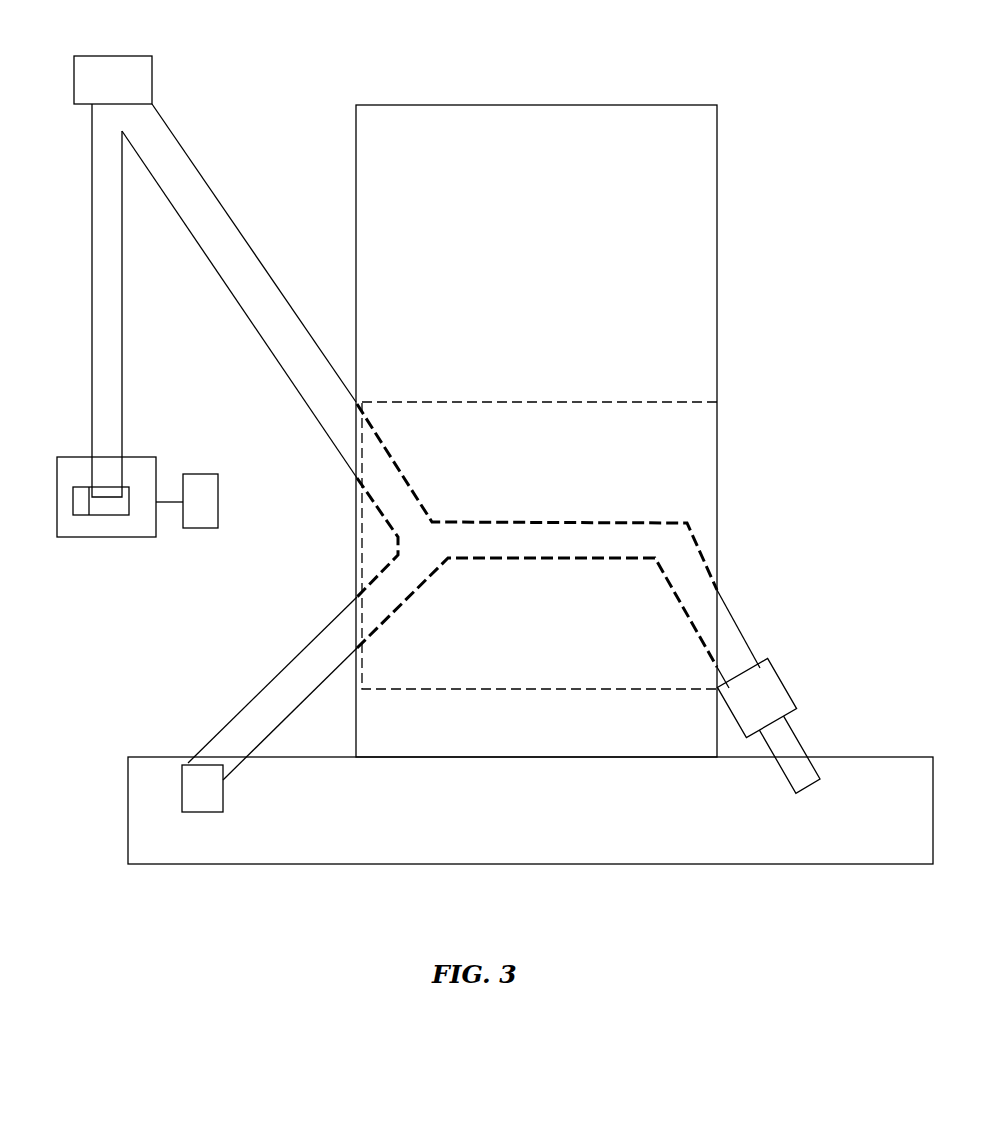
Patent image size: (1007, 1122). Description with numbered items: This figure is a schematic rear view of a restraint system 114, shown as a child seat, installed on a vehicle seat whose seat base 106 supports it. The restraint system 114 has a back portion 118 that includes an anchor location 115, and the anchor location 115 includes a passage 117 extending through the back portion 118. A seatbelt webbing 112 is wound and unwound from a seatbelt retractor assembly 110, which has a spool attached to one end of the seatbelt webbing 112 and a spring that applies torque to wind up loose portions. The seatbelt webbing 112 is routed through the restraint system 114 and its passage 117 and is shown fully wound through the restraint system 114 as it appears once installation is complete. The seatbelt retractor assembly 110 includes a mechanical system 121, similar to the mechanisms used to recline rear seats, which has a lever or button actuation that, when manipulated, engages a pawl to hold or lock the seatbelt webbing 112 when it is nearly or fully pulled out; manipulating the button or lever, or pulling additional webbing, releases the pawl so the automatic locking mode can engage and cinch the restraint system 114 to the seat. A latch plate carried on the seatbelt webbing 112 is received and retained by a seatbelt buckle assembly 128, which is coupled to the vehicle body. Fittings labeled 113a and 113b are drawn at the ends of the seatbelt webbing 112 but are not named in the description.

The seat base 106 is at (128, 831).
The seatbelt retractor assembly 110 is at (46, 441).
The seatbelt webbing 112 is at (262, 350).
The first fitting 113a is at (147, 82).
The second fitting 113b is at (218, 798).
The restraint system 114 is at (768, 213).
The anchor location 115 is at (343, 513).
The passage 117 is at (540, 400).
The back portion 118 is at (357, 184).
The mechanical system 121 is at (200, 474).
The seatbelt buckle assembly 128 is at (787, 693).